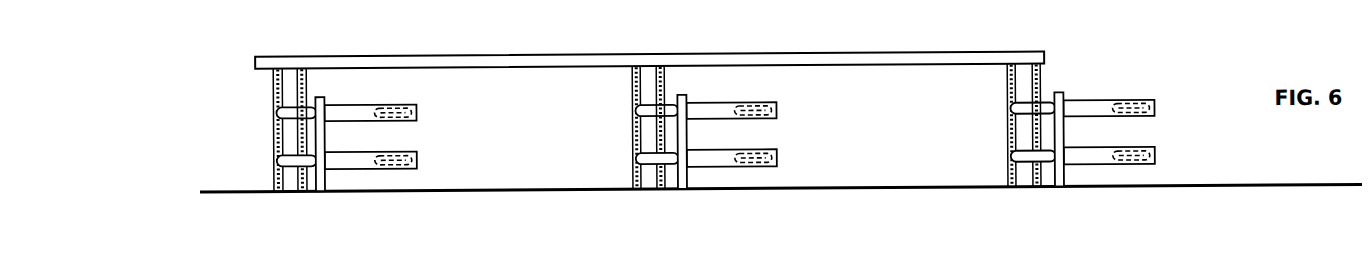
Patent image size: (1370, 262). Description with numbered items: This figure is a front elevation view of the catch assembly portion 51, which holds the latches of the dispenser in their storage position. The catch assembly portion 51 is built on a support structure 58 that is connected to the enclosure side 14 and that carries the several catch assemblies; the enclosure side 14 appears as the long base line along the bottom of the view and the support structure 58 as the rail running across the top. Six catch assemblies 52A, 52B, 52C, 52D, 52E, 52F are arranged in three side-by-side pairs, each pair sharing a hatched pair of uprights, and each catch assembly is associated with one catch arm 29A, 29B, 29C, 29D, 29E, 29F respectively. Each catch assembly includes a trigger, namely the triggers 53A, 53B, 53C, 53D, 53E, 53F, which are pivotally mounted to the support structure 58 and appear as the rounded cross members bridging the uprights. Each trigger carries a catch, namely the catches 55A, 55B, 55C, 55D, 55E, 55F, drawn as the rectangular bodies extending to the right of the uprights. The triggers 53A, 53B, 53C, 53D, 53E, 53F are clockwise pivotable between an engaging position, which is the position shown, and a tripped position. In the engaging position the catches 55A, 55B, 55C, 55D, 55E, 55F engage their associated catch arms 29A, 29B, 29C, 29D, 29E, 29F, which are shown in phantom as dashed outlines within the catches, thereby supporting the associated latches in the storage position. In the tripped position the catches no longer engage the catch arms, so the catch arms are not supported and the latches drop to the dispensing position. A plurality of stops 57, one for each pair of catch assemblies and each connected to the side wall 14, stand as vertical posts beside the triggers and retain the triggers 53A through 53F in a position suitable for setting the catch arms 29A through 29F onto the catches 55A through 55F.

The enclosure side 14 is at (1266, 190).
The catch assembly portion 51 is at (207, 123).
The catch assembly 52A is at (1095, 98).
The catch assembly 52B is at (715, 101).
The catch assembly 52C is at (356, 104).
The catch assembly 52D is at (1088, 152).
The catch assembly 52E is at (709, 154).
The catch assembly 52F is at (373, 155).
The trigger 53A is at (1011, 111).
The trigger 53B is at (636, 113).
The trigger 53C is at (277, 111).
The trigger 53D is at (1011, 163).
The trigger 53E is at (636, 166).
The trigger 53F is at (277, 163).
The catch 55A is at (1156, 113).
The catch 55B is at (778, 118).
The catch 55C is at (418, 116).
The catch 55D is at (1156, 163).
The catch 55E is at (778, 168).
The catch 55F is at (418, 166).
The catch arm 29A is at (1136, 147).
The catch arm 29B is at (757, 150).
The catch arm 29C is at (395, 160).
The catch arm 29D is at (1131, 111).
The catch arm 29E is at (749, 112).
The catch arm 29F is at (395, 96).
The stop 57 is at (307, 104).
The support structure 58 is at (606, 59).